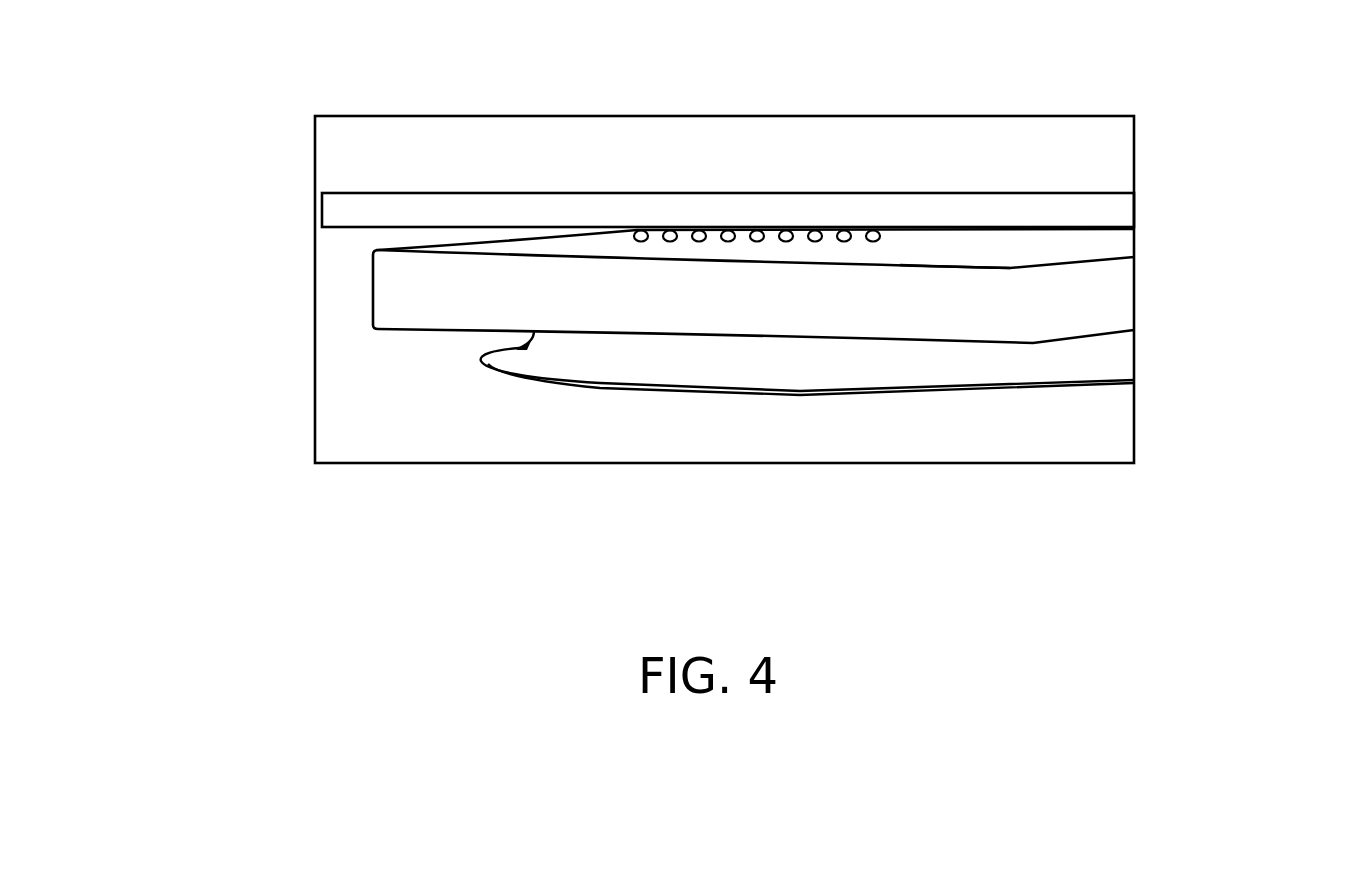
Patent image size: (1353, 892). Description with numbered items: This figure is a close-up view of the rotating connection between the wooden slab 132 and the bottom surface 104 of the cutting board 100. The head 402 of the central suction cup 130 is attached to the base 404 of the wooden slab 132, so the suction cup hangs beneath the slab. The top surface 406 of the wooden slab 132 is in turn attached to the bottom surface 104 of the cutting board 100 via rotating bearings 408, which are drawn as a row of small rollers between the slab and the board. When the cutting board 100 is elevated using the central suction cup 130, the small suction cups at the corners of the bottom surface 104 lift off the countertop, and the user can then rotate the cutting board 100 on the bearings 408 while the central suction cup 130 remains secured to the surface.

The cutting board 100 is at (272, 155).
The bottom surface 104 is at (1128, 239).
The central suction cup 130 is at (632, 368).
The wooden slab 132 is at (446, 303).
The head 402 is at (820, 357).
The base 404 is at (1024, 365).
The top surface 406 is at (1006, 268).
The rotating bearings 408 is at (637, 229).